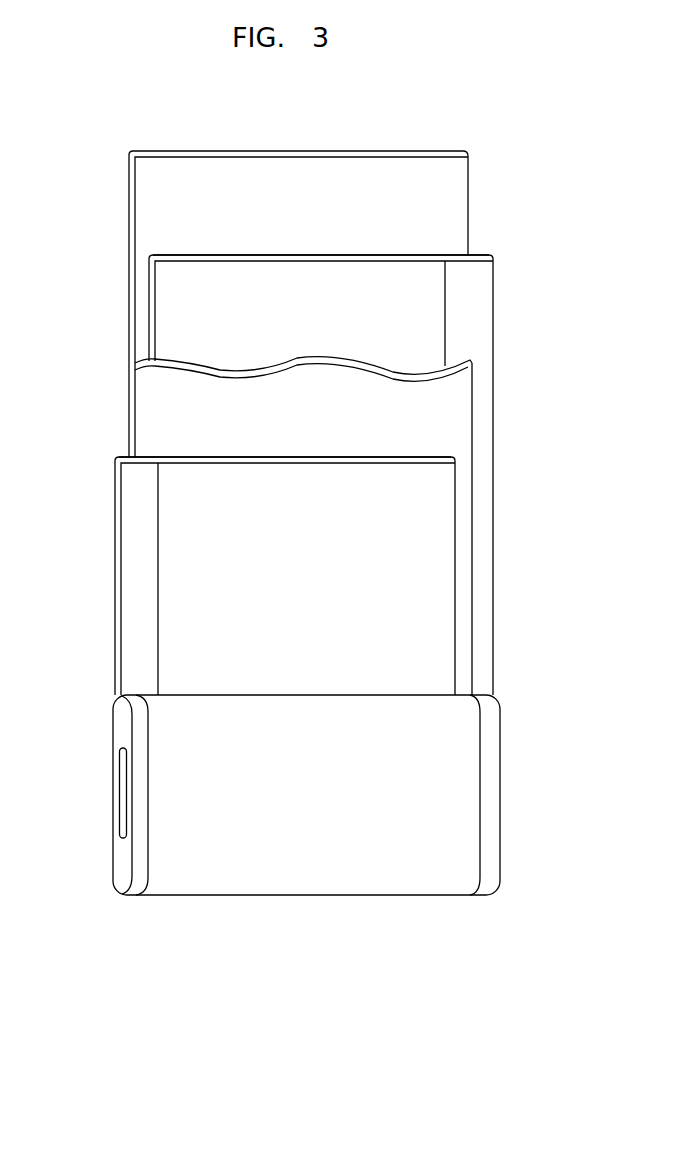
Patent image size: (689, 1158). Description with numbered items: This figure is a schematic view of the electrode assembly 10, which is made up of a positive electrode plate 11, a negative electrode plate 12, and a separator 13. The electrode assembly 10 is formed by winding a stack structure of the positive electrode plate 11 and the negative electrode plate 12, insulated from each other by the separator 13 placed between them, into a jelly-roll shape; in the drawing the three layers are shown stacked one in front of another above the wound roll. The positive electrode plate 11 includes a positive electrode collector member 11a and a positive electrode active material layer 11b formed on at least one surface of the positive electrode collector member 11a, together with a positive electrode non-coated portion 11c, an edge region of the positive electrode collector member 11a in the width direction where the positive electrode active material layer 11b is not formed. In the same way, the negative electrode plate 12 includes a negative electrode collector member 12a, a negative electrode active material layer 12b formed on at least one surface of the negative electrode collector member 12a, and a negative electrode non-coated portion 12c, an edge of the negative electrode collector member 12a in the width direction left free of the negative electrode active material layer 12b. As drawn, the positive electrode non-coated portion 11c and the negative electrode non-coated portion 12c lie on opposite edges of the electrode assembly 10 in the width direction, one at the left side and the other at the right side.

The electrode assembly 10 is at (308, 876).
The positive electrode plate 11 is at (294, 554).
The positive electrode collector member 11a is at (297, 460).
The positive electrode active material layer 11b is at (437, 595).
The positive electrode non-coated portion 11c is at (132, 623).
The negative electrode plate 12 is at (303, 453).
The negative electrode collector member 12a is at (305, 258).
The negative electrode active material layer 12b is at (175, 305).
The negative electrode non-coated portion 12c is at (482, 320).
The separator 13 is at (118, 217).